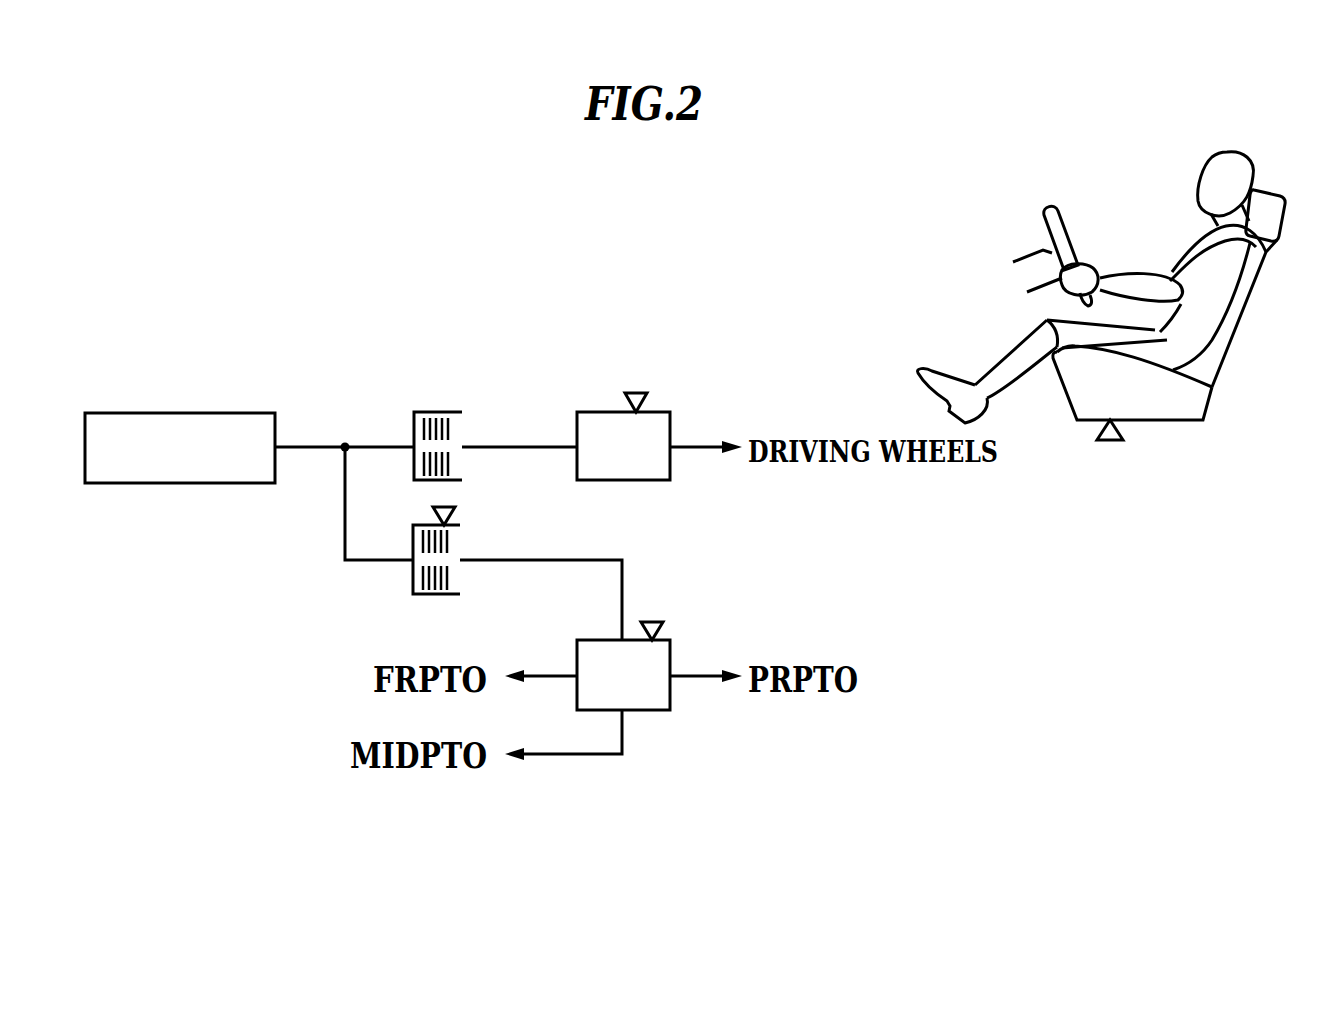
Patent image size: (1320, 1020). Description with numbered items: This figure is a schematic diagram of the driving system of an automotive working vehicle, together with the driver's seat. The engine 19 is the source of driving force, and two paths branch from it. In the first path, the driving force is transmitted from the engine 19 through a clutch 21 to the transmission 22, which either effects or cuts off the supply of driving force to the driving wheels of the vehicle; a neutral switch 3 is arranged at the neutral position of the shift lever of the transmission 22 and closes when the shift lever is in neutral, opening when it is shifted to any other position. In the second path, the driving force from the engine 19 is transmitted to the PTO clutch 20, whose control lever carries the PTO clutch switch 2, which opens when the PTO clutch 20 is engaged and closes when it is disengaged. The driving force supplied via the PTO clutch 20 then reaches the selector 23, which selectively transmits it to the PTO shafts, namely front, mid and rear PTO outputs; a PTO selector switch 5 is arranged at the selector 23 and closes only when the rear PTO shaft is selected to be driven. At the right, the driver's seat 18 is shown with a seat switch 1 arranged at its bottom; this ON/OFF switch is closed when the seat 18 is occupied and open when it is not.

The seat switch 1 is at (1113, 441).
The PTO clutch switch 2 is at (454, 522).
The neutral switch 3 is at (630, 397).
The PTO selector switch 5 is at (660, 625).
The seat 18 is at (1228, 360).
The engine 19 is at (216, 413).
The PTO clutch 20 is at (413, 575).
The clutch 21 is at (414, 425).
The transmission 22 is at (577, 421).
The selector 23 is at (655, 711).